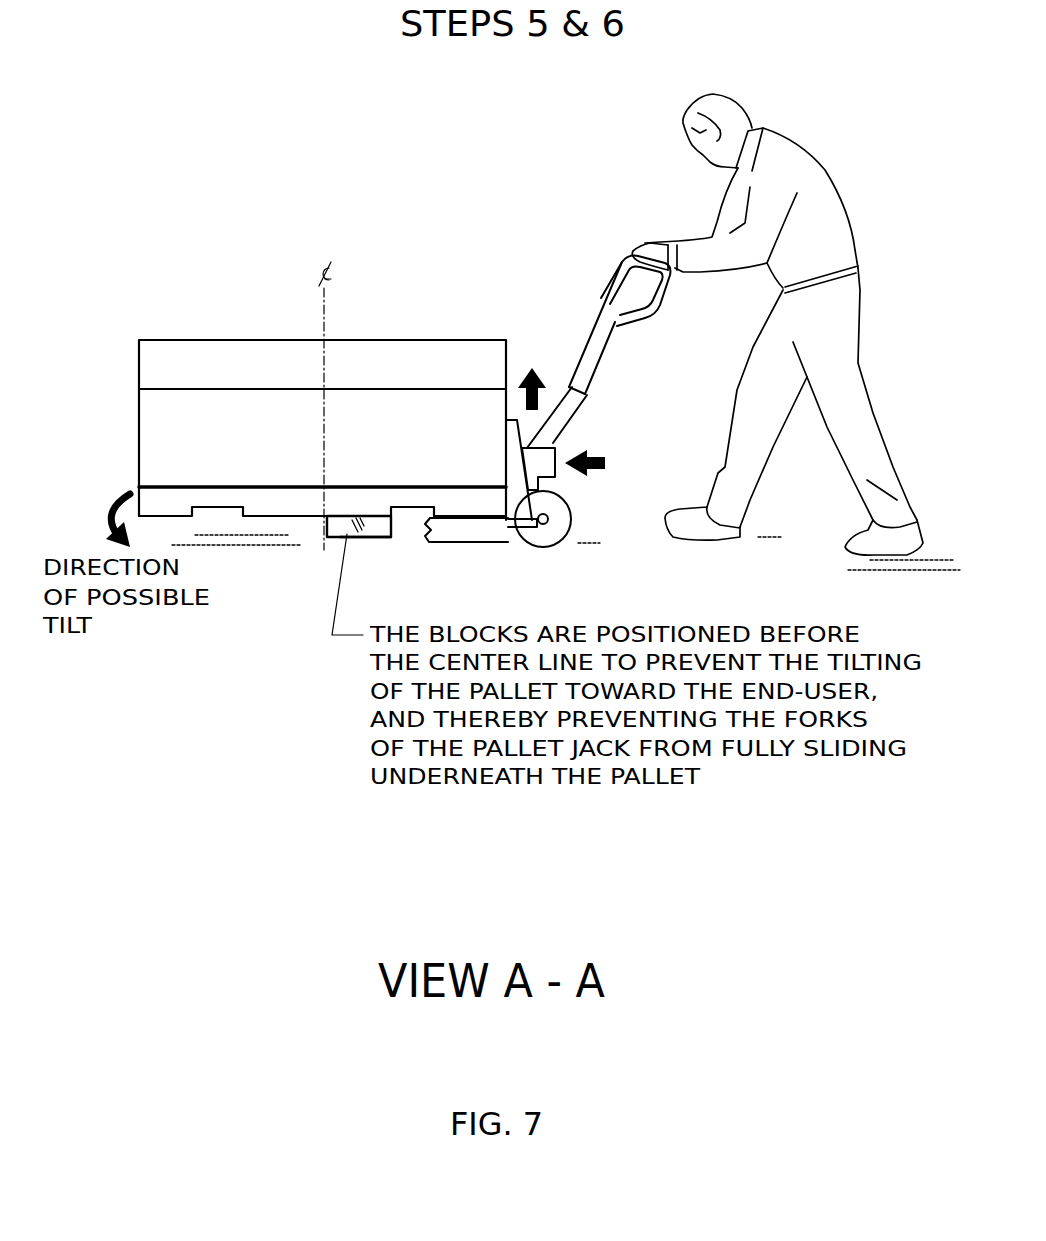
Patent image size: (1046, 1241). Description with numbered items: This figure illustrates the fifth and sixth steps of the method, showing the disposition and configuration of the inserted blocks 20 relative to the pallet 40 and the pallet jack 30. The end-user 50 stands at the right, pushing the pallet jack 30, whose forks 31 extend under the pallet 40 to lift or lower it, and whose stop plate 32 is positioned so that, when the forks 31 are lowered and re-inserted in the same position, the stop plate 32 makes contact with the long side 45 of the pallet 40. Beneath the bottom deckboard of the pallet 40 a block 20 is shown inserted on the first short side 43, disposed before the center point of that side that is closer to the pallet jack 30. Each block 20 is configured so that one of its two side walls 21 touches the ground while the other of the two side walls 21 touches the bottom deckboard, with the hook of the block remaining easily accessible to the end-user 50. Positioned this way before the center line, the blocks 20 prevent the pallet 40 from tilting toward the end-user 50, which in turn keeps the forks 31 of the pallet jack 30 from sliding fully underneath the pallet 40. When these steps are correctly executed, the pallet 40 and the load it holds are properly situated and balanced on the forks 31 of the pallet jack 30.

The block 20 is at (347, 504).
The two side walls, block 21 is at (375, 538).
The pallet jack 30 is at (590, 277).
The forks, pallet jack 31 is at (463, 530).
The stop plate, pallet jack 32 is at (506, 462).
The pallet 40 is at (136, 481).
The first short side, pallet 43 is at (278, 505).
The long side, pallet 45 is at (510, 537).
The end-user 50 is at (803, 172).